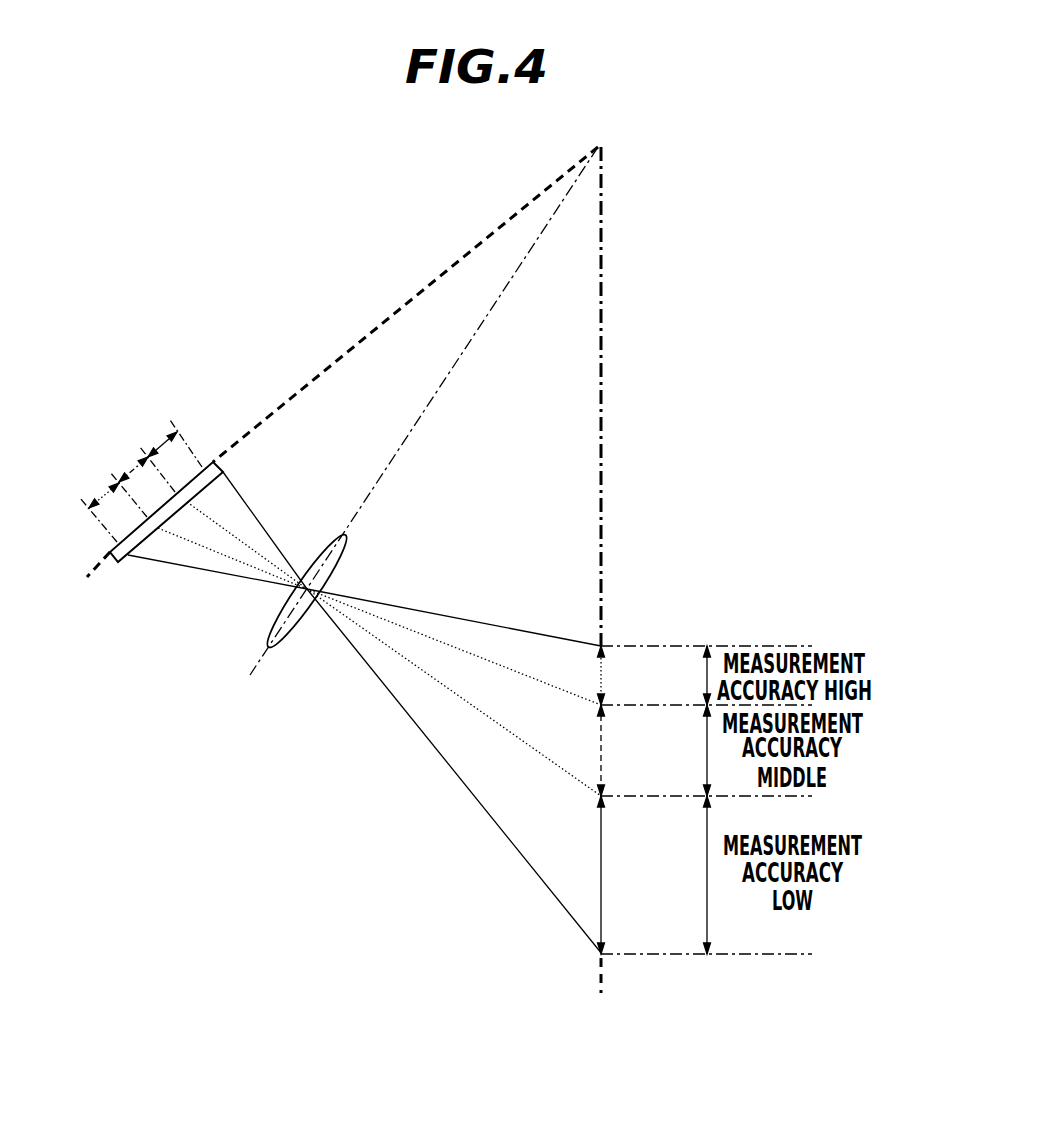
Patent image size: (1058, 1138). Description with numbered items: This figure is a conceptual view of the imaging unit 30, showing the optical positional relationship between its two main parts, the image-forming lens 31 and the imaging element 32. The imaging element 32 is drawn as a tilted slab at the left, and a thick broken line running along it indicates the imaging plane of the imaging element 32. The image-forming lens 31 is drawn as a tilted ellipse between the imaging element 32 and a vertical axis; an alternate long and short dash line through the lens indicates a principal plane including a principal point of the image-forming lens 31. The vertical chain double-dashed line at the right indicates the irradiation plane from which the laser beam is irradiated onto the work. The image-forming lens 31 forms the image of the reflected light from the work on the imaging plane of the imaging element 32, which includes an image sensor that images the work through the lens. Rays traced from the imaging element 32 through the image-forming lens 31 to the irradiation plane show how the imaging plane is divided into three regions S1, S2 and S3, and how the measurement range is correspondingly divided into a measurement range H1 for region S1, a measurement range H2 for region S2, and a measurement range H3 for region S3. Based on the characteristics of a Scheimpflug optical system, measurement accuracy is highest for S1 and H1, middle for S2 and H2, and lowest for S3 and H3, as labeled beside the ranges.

The imaging unit 30 is at (242, 402).
The image-forming lens 31 is at (325, 548).
The imaging element 32 is at (213, 460).
The region S1 is at (90, 505).
The region S2 is at (132, 476).
The region S3 is at (162, 448).
The measurement range H1 is at (602, 678).
The measurement range H2 is at (602, 760).
The measurement range H3 is at (603, 883).